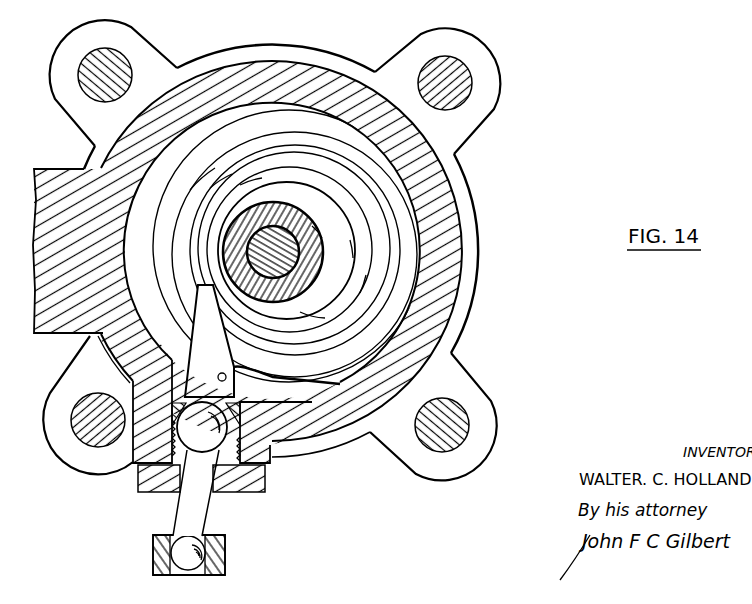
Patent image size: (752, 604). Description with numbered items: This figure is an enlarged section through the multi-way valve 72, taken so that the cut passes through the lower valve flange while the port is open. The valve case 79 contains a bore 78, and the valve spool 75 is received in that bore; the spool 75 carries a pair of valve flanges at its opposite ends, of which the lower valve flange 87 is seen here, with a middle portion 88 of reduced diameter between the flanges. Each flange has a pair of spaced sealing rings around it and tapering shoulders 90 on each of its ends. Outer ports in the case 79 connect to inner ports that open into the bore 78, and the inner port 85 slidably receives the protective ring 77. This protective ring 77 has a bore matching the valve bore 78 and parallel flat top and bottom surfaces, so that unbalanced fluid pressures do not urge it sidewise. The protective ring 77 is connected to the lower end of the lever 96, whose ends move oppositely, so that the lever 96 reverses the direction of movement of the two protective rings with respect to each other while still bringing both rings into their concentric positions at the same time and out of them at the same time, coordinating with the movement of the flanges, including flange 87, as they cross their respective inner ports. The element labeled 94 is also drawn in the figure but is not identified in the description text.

The housing 72 is at (480, 165).
The hub 75 is at (286, 202).
The spring coil 77 is at (252, 190).
The spiral spring 78 is at (340, 290).
The housing wall 79 is at (318, 75).
The spring coil 85 is at (202, 190).
The spring coil 87 is at (353, 258).
The spring end 88 is at (343, 218).
The spring coil 90 is at (222, 190).
The spring coil 94 is at (360, 293).
The lever 96 is at (153, 552).